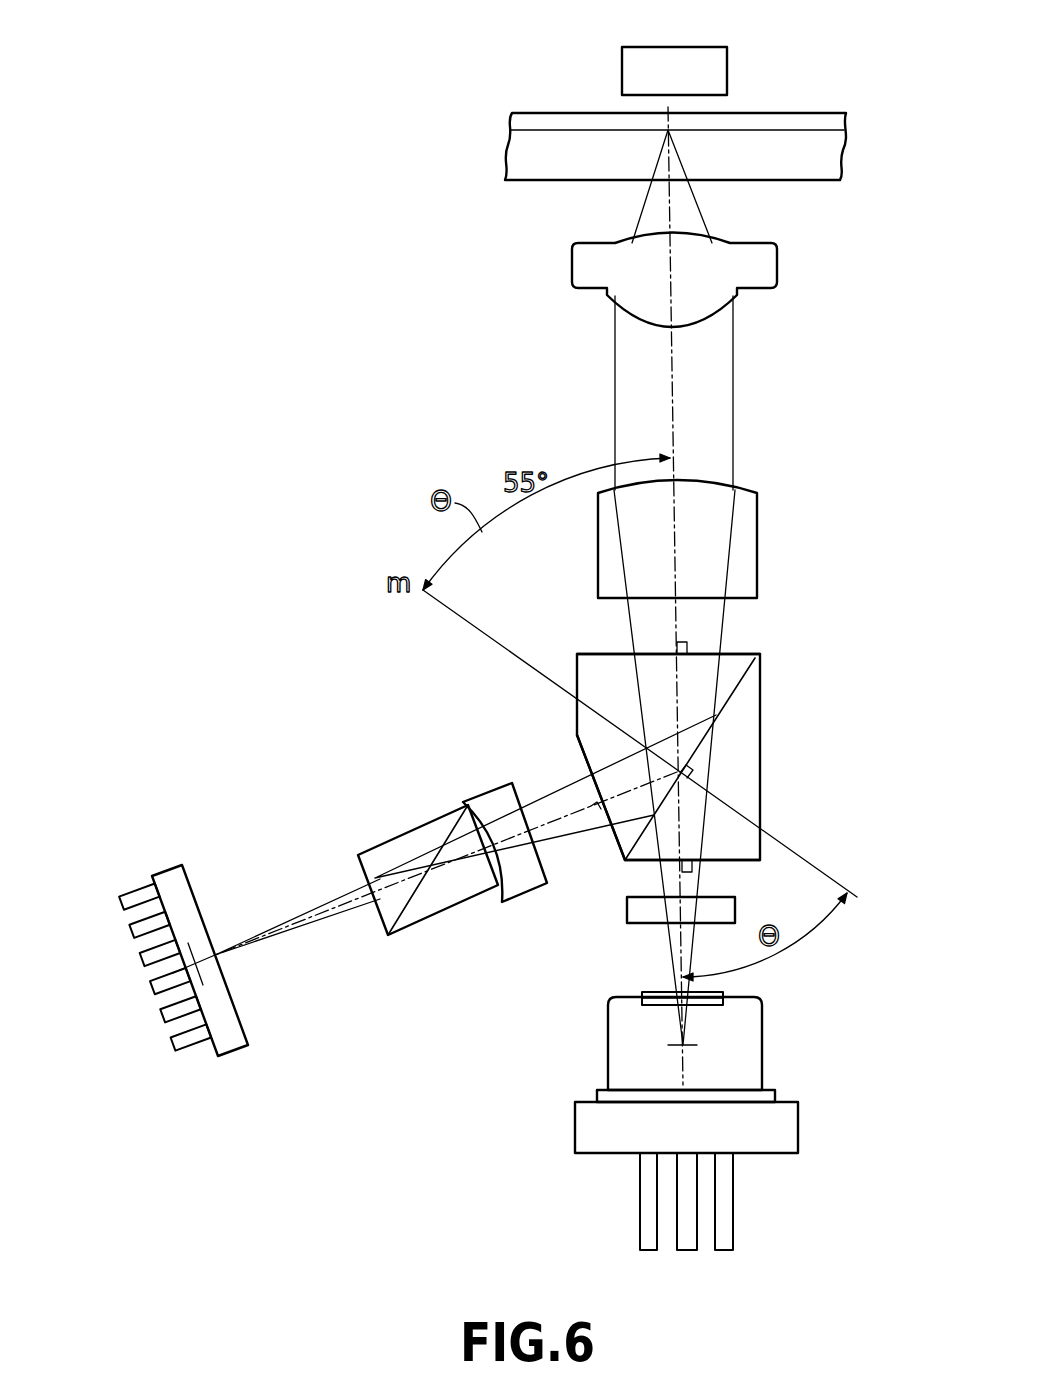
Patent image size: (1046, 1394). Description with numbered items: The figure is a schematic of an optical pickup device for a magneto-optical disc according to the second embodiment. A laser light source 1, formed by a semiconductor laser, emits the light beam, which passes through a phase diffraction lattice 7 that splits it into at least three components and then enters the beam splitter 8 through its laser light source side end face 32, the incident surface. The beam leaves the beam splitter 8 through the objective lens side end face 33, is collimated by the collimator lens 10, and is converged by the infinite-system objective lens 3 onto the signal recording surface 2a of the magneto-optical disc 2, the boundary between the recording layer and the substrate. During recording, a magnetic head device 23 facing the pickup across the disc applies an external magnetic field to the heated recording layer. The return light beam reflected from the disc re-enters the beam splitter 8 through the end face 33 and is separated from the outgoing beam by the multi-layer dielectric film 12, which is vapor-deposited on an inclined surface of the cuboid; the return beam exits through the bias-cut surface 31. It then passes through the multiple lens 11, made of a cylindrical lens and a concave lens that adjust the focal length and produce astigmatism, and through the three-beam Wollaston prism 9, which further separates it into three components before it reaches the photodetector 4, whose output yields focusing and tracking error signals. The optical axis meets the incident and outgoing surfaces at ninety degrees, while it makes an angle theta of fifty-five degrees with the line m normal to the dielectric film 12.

The laser light source 1 is at (762, 1043).
The magneto-optical disc 2 is at (786, 110).
The signal recording surface 2a is at (825, 126).
The objective lens 3 is at (758, 268).
The photodetector 4 is at (237, 1040).
The phase diffraction lattice 7 is at (638, 912).
The beam splitter 8 is at (746, 747).
The three-beam Wollaston prism 9 is at (418, 914).
The collimator lens 10 is at (743, 540).
The multiple lens 11 is at (515, 888).
The multi-layer dielectric film 12 is at (737, 688).
The magnetic head device 23 is at (707, 49).
The bias-cut surface 31 is at (580, 760).
The laser light source side end face 32 is at (740, 866).
The objective lens side end face 33 is at (745, 654).